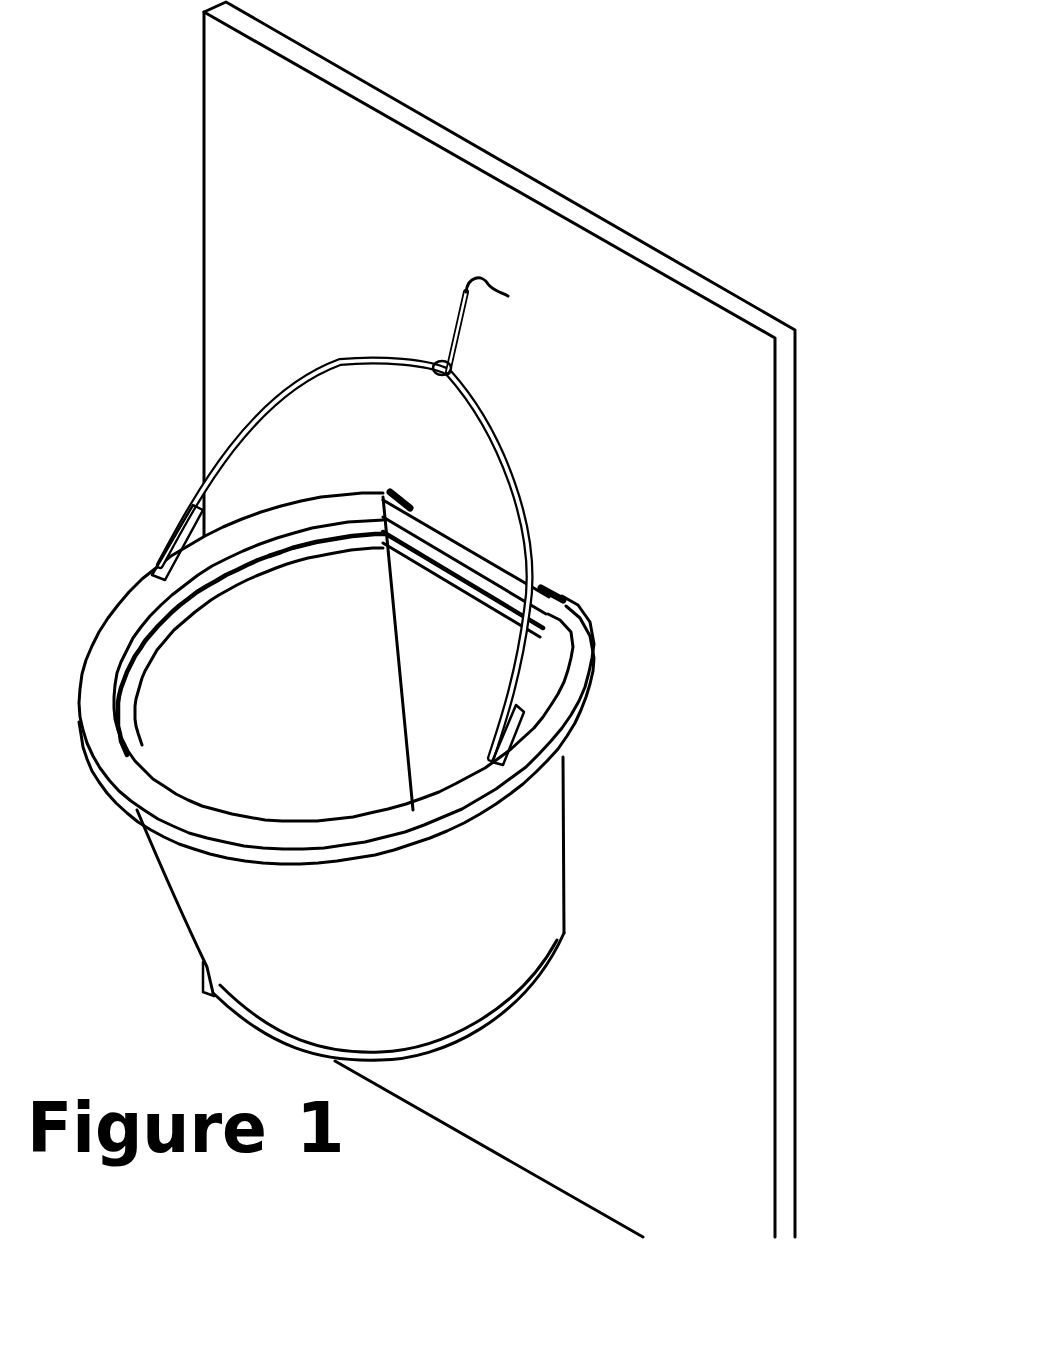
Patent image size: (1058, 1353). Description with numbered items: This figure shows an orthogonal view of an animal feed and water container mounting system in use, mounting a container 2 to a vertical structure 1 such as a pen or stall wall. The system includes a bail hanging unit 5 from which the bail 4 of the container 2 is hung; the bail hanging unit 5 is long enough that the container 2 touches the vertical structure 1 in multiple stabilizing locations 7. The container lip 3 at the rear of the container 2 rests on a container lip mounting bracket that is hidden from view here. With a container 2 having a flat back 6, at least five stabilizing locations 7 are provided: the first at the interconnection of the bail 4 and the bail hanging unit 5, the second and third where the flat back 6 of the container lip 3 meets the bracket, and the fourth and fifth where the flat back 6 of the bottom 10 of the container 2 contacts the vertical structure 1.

The vertical structure 1 is at (750, 597).
The container 2 is at (217, 925).
The container lip 3 is at (133, 810).
The bail 4 is at (290, 383).
The bail hanging unit 5 is at (456, 302).
The flat back 6 is at (465, 545).
The stabilizing locations 7 is at (452, 368).
The bottom 10 is at (430, 1052).